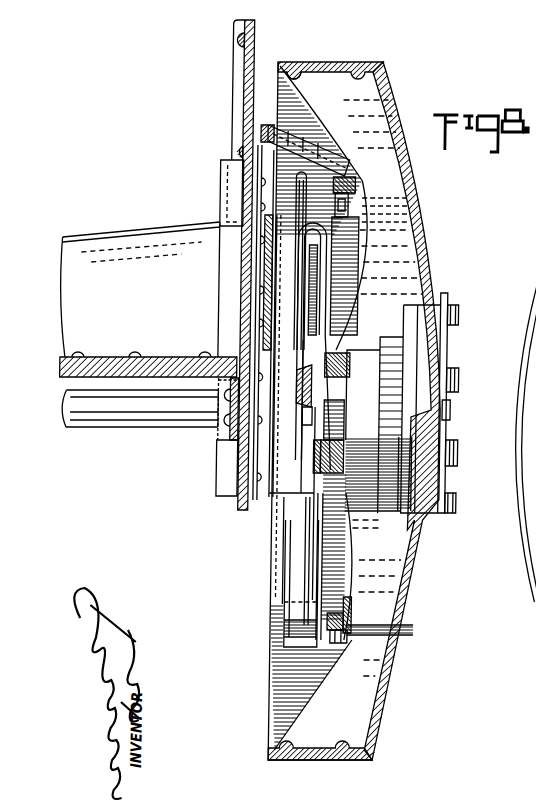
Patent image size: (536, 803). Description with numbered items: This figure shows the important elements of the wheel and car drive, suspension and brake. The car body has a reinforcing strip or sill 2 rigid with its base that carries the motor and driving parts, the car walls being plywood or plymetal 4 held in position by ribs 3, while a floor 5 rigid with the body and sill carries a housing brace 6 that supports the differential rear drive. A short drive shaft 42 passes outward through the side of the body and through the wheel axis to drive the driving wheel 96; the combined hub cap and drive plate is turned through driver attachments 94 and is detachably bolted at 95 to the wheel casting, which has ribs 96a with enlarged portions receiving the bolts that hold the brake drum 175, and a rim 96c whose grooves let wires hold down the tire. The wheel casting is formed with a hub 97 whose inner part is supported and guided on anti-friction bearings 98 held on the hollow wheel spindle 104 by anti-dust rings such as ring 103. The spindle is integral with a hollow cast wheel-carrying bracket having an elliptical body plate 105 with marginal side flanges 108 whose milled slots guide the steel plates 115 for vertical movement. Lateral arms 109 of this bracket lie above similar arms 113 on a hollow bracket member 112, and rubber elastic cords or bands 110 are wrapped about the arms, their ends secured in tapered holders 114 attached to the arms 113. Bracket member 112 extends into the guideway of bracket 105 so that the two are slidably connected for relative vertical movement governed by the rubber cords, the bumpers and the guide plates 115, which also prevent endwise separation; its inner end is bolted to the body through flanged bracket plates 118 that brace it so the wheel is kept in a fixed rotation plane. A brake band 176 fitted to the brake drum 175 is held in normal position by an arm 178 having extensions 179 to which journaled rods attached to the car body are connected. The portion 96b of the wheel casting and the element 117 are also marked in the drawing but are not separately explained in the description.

The reinforcing strip or sill 2 is at (218, 172).
The ribs 3 is at (229, 80).
The plywood or plymetal car wall 4 is at (246, 100).
The floor 5 is at (104, 358).
The housing brace 6 is at (143, 237).
The drive shaft 42 is at (165, 422).
The driver attachments 94 is at (460, 380).
The bolts 95 is at (458, 316).
The driving wheel 96 is at (424, 243).
The ribs of the wheel casting 96a is at (366, 120).
The housing wall portion 96b is at (383, 615).
The rim of the wheel 96c is at (327, 62).
The hub 97 is at (410, 345).
The anti-friction bearing 98 is at (350, 357).
The anti-dust ring 103 is at (365, 557).
The hollow wheel spindle 104 is at (333, 398).
The elliptical body plate of wheel carrying bracket 105 is at (288, 627).
The marginal side flanges 108 is at (342, 172).
The lateral arms 109 is at (330, 270).
The rubber elastic cords or bands 110 is at (310, 162).
The hollow bracket member 112 is at (275, 332).
The arms 113 is at (303, 410).
The tapered holders 114 is at (300, 395).
The steel guide plates 115 is at (315, 475).
The pin 117 is at (309, 538).
The flanged bracket plates 118 is at (263, 263).
The brake drum 175 is at (346, 656).
The brake band 176 is at (339, 645).
The arm 178 is at (315, 158).
The extensions 179 is at (263, 124).